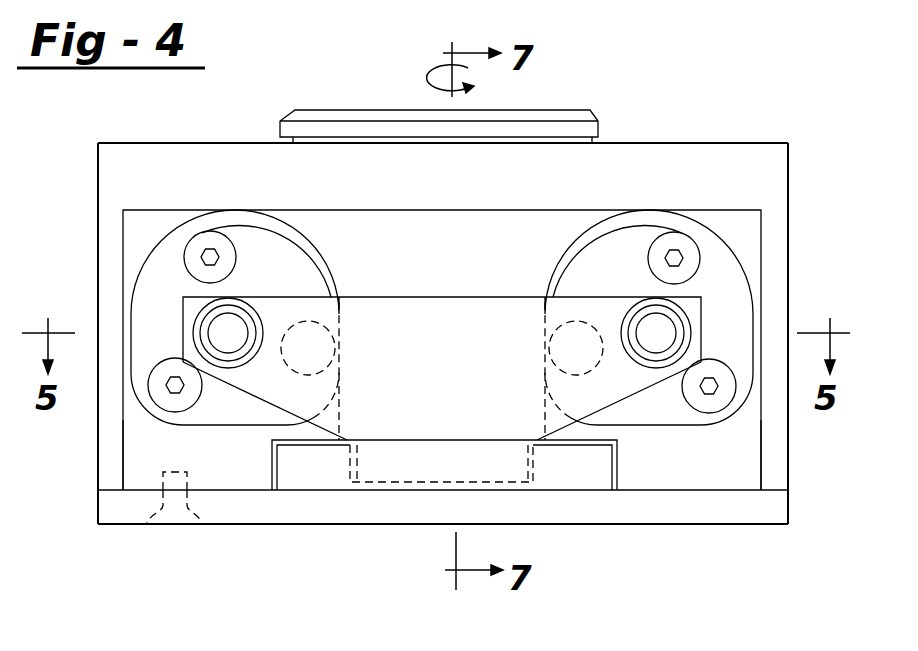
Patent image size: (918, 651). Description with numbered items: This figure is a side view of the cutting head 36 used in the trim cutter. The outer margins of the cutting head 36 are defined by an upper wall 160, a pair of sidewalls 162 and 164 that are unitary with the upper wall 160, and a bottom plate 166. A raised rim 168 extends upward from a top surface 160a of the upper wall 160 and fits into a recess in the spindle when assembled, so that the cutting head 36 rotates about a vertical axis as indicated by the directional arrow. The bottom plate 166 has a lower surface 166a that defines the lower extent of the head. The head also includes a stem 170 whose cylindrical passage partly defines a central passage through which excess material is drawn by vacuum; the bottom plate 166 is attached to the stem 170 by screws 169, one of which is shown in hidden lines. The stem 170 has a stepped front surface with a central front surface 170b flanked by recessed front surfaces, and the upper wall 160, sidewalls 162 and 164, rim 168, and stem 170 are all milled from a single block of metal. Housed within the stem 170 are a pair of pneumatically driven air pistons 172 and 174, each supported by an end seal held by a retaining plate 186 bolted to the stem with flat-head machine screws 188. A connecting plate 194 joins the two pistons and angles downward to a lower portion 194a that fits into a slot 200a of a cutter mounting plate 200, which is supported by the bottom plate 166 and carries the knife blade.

The cutting head 36 is at (846, 130).
The upper wall 160 is at (683, 156).
The top surface of upper wall 160a is at (245, 143).
The sidewall 162 is at (100, 213).
The sidewall 164 is at (773, 222).
The bottom plate 166 is at (747, 520).
The lower surface of bottom plate 166a is at (687, 525).
The raised rim 168 is at (600, 112).
The screw 169 is at (187, 505).
The stem 170 is at (450, 216).
The central front surface 170b is at (537, 275).
The air piston 172 is at (663, 333).
The air piston 174 is at (217, 328).
The retaining plate 186 is at (725, 277).
The flat-head machine screw 188 is at (694, 392).
The connecting plate 194 is at (297, 425).
The lower portion of connecting plate 194a is at (395, 472).
The cutter mounting plate 200 is at (465, 523).
The slot 200a is at (537, 482).